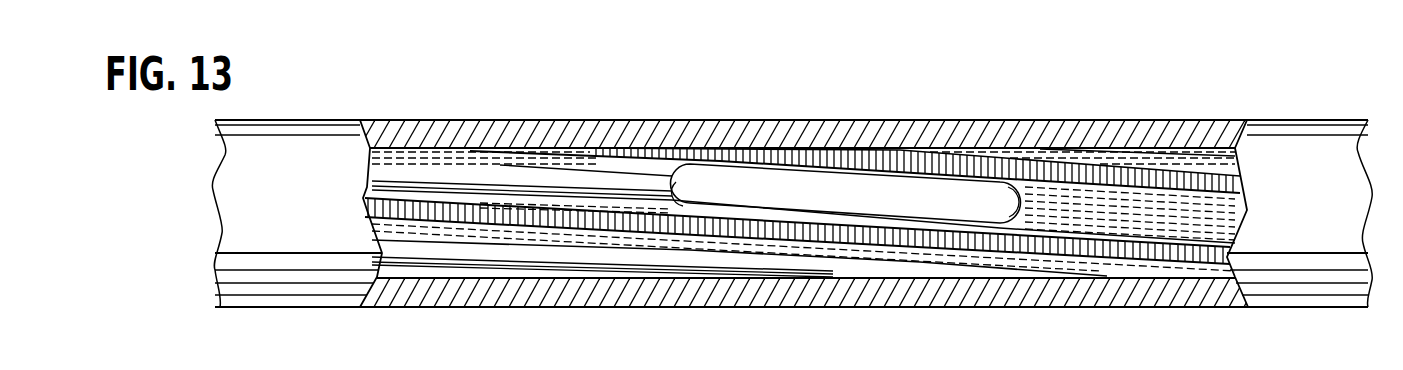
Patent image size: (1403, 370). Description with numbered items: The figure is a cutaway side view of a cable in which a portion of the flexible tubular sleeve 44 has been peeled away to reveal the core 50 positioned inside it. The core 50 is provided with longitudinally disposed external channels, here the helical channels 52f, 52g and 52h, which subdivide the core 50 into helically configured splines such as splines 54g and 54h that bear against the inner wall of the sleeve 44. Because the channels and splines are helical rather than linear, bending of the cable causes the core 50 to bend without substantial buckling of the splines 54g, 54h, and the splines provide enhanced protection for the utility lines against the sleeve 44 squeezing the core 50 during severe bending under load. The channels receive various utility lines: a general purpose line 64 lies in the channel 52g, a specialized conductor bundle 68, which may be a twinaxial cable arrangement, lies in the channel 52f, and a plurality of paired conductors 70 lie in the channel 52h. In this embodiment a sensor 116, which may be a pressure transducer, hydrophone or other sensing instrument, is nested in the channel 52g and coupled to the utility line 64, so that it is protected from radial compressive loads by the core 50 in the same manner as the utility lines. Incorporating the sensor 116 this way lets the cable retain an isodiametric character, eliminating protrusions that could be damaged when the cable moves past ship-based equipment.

The flexible tubular sleeve 44 is at (366, 121).
The core 50 is at (437, 152).
The helical channel 52f is at (1133, 265).
The helical channel 52g is at (1200, 213).
The helical channel 52h is at (992, 152).
The helical spline 54g is at (522, 213).
The helical spline 54h is at (850, 162).
The general purpose line 64 is at (613, 182).
The specialized conductor bundle 68 is at (645, 258).
The paired conductors 70 is at (1150, 150).
The sensor 116 is at (727, 182).